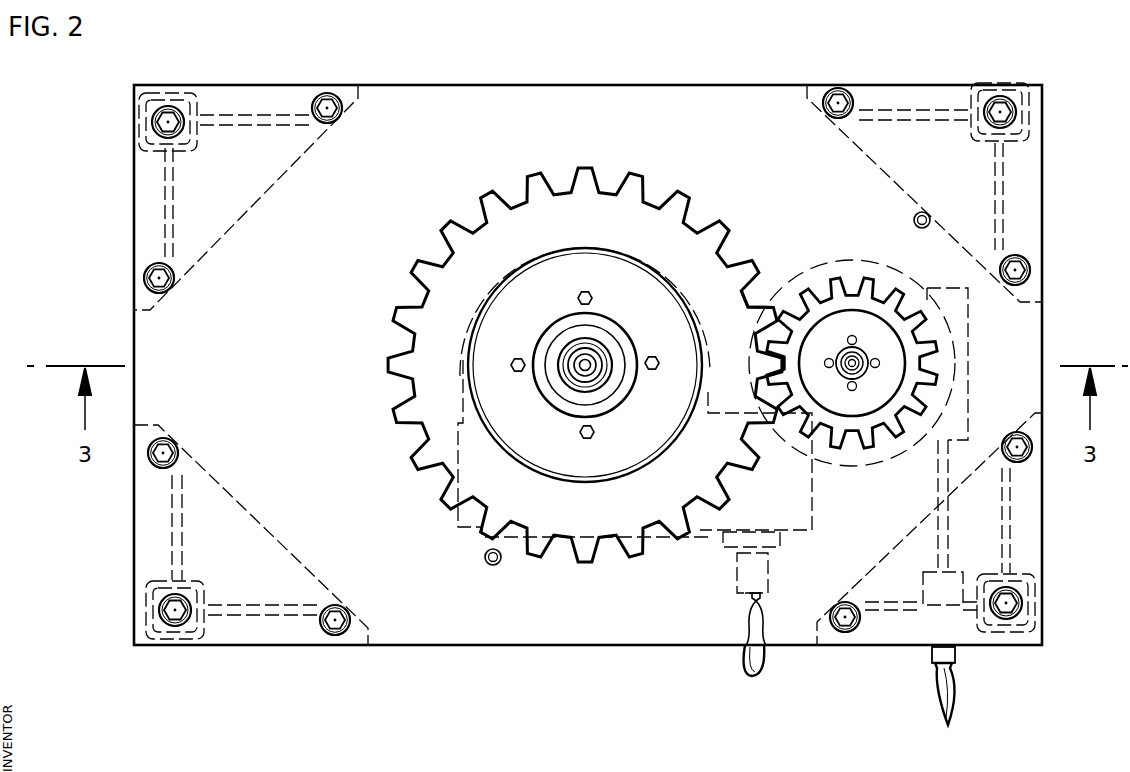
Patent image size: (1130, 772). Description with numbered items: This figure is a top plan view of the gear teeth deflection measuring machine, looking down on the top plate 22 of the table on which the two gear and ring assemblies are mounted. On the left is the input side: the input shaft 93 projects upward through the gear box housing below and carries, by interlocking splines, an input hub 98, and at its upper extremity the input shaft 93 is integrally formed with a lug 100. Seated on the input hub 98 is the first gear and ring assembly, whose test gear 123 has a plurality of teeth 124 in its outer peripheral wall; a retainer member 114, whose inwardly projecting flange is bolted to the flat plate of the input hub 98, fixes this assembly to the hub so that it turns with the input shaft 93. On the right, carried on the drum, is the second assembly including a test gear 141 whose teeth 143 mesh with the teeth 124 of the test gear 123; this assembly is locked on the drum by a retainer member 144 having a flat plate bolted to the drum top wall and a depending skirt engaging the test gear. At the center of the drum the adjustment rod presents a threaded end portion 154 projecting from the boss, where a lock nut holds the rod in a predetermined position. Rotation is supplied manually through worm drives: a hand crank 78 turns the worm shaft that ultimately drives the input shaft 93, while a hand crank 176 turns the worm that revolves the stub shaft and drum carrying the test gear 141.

The top plate 22 is at (718, 100).
The test gear 123 is at (680, 232).
The teeth 124 is at (752, 270).
The retainer member 114 is at (545, 283).
The input hub 98 is at (592, 333).
The input shaft 93 is at (582, 373).
The lug 100 is at (582, 364).
The teeth 143 is at (843, 290).
The test gear 141 is at (893, 298).
The retainer member 144 is at (890, 376).
The threaded end portion 154 is at (866, 357).
The hand crank 78 is at (743, 652).
The hand crank 176 is at (957, 694).